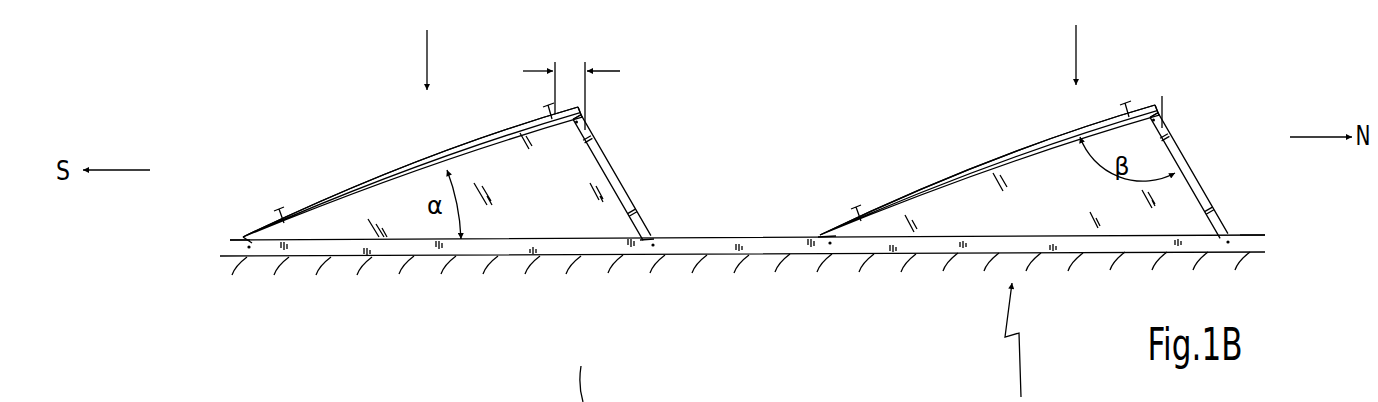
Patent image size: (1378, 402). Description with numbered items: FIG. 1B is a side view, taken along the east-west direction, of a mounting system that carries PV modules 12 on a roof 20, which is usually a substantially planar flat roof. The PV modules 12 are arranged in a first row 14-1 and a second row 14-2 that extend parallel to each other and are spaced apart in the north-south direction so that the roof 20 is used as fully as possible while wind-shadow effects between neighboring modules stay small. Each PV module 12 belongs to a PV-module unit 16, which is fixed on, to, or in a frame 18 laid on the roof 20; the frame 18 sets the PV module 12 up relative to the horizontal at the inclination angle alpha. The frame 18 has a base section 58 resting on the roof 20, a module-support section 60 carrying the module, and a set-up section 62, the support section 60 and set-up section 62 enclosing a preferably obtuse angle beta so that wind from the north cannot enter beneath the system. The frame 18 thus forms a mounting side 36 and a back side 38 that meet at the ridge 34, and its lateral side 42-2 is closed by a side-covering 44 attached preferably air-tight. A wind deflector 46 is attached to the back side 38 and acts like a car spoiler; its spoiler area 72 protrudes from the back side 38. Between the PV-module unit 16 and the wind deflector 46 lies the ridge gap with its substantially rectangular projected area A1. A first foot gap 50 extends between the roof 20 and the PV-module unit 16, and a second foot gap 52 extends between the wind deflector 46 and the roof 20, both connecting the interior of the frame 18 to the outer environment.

The PV module 12 is at (398, 163).
The first row 14-1 is at (495, 393).
The second row 14-2 is at (452, 51).
The PV-module unit 16 is at (327, 178).
The frame 18 is at (752, 232).
The roof 20 is at (1254, 246).
The ridge 34 is at (1141, 101).
The mounting side 36 is at (262, 228).
The back side 38 is at (623, 179).
The lateral side 42-2 is at (600, 371).
The side-covering 44 is at (548, 205).
The wind deflector 46 is at (598, 140).
The first foot gap 50 is at (234, 245).
The second foot gap 52 is at (658, 240).
The base section 58 is at (780, 236).
The module-support section 60 is at (247, 237).
The set-up section 62 is at (1176, 143).
The spoiler area 72 is at (585, 117).
The area of the ridge gap A1 is at (565, 70).